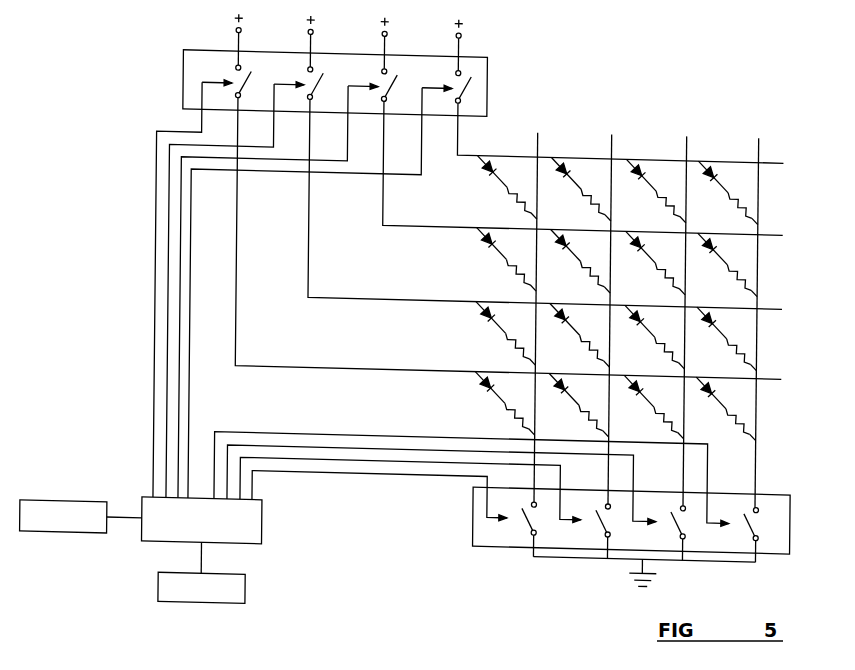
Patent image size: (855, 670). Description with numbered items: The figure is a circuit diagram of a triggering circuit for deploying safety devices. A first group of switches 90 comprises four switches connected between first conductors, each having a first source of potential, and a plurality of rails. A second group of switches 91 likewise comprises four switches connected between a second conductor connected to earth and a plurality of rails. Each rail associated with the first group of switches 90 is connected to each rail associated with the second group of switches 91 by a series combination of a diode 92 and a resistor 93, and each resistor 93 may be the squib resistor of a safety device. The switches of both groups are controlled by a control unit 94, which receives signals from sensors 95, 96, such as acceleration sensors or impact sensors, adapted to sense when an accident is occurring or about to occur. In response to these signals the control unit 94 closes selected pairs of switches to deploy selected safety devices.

The first group of switches 90 is at (485, 57).
The second group of switches 91 is at (762, 486).
The diode 92 is at (449, 387).
The resistor 93 is at (479, 418).
The control unit 94 is at (264, 530).
The sensor 95 is at (70, 542).
The sensor 96 is at (248, 593).